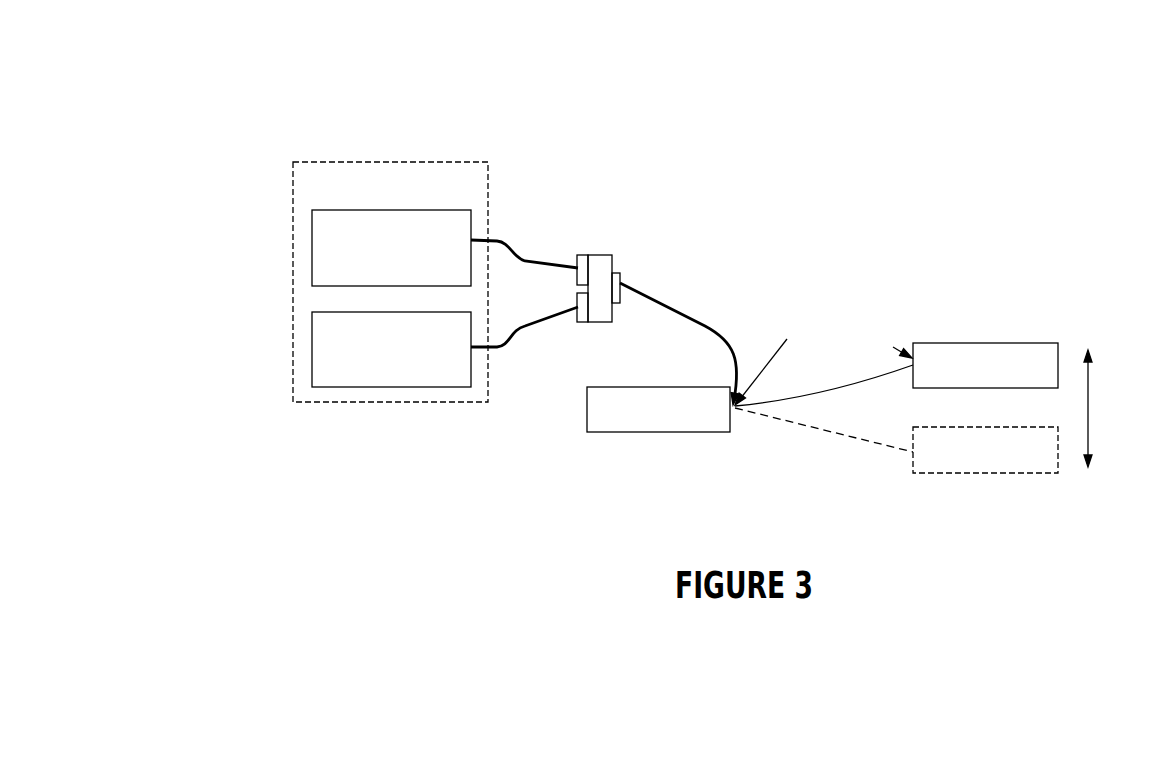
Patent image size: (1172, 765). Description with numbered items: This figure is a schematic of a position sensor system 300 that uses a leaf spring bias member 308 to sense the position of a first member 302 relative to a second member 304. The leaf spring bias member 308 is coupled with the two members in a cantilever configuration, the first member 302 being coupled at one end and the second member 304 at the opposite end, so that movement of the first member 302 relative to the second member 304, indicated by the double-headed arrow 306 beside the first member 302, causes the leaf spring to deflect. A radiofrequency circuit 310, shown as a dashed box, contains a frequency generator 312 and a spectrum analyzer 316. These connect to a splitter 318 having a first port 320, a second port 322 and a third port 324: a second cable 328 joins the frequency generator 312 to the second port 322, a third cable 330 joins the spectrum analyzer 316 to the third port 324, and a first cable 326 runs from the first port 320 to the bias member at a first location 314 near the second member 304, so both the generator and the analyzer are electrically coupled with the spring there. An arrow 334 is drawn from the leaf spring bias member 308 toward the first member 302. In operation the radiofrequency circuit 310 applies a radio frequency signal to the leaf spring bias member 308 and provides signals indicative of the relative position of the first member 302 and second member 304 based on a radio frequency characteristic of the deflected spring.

The position sensor system 300 is at (349, 57).
The first member 302 is at (962, 343).
The second member 304 is at (658, 409).
The direction of movement 306 is at (1088, 403).
The leaf spring bias member 308 is at (837, 388).
The radiofrequency circuit 310 is at (293, 192).
The frequency generator 312 is at (312, 245).
The first location 314 is at (774, 362).
The spectrum analyzer 316 is at (312, 338).
The splitter 318 is at (607, 255).
The first port 320 is at (622, 277).
The second port 322 is at (577, 255).
The third port 324 is at (575, 324).
The first cable 326 is at (672, 311).
The second cable 328 is at (508, 240).
The third cable 330 is at (502, 345).
The reflected signal 334 is at (882, 343).